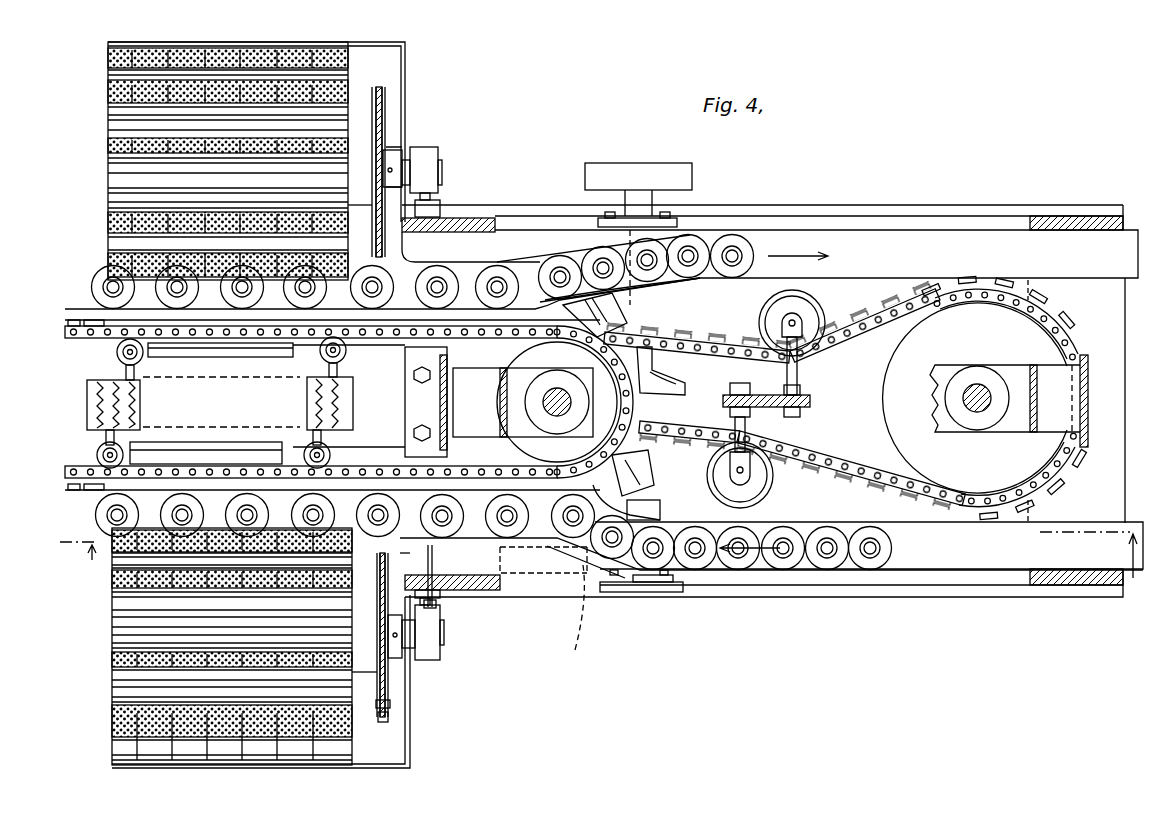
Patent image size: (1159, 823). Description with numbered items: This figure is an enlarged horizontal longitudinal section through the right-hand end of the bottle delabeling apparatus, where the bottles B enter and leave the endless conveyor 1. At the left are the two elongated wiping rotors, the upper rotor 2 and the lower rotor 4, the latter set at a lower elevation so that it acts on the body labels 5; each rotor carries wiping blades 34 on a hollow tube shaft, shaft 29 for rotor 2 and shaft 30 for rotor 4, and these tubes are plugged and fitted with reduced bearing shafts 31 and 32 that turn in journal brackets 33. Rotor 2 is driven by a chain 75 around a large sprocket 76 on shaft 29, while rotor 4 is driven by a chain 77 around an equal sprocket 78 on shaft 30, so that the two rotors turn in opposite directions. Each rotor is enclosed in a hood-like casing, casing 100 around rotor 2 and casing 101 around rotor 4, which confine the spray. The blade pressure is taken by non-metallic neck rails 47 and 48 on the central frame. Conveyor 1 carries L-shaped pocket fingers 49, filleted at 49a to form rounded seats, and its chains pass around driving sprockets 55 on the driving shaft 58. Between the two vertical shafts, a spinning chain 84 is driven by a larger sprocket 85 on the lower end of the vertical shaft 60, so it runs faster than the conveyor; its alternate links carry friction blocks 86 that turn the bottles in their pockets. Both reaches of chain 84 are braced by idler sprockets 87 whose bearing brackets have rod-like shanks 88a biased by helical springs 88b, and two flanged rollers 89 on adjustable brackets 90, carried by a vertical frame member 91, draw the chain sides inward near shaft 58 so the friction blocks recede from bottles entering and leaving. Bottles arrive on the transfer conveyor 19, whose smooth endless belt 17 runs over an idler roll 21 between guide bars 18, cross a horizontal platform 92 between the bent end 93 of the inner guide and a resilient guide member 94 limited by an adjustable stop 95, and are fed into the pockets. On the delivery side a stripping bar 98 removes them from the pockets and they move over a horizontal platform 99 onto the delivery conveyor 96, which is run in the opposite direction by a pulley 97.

The endless conveyor 1 is at (652, 414).
The wiping rotor 2 is at (302, 690).
The second wiping rotor 4 is at (296, 105).
The body labels 5 is at (605, 570).
The endless belt 17 is at (895, 575).
The guide bars 18 is at (993, 538).
The transfer conveyor 19 is at (979, 607).
The idler roll 21 is at (578, 616).
The rotor shaft 29 is at (374, 665).
The rotor shaft 30 is at (353, 140).
The bearing shaft 31 is at (443, 172).
The bearing shaft 32 is at (444, 636).
The journal brackets 33 is at (428, 150).
The wiping blades 34 is at (250, 718).
The neck rail 47 is at (465, 300).
The neck rail 48 is at (477, 500).
The pocket fingers 49 is at (616, 315).
The fillet 49a is at (650, 362).
The driving sprockets 55 is at (480, 374).
The driving shaft 58 is at (545, 405).
The vertical shaft 60 is at (978, 412).
The chain 75 is at (390, 722).
The sprocket 76 is at (392, 706).
The chain 77 is at (405, 246).
The sprocket 78 is at (378, 133).
The spinning chain 84 is at (826, 468).
The driving sprocket 85 is at (882, 377).
The friction blocks 86 is at (692, 345).
The idler sprockets 87 is at (117, 352).
The rod-like shanks 88a is at (103, 370).
The helical springs 88b is at (90, 403).
The flanged rollers 89 is at (805, 306).
The adjustable brackets 90 is at (788, 381).
The vertical frame member 91 is at (811, 401).
The horizontal platform 92 is at (556, 563).
The bent end 93 is at (622, 498).
The resilient guide member 94 is at (548, 555).
The adjustable stop 95 is at (408, 575).
The delivery conveyor 96 is at (948, 229).
The pulley 97 is at (694, 174).
The stripping bar 98 is at (655, 292).
The horizontal platform 99 is at (535, 225).
The hood-like casing 100 is at (352, 768).
The hood-like casing 101 is at (236, 40).
The bottles B is at (92, 292).